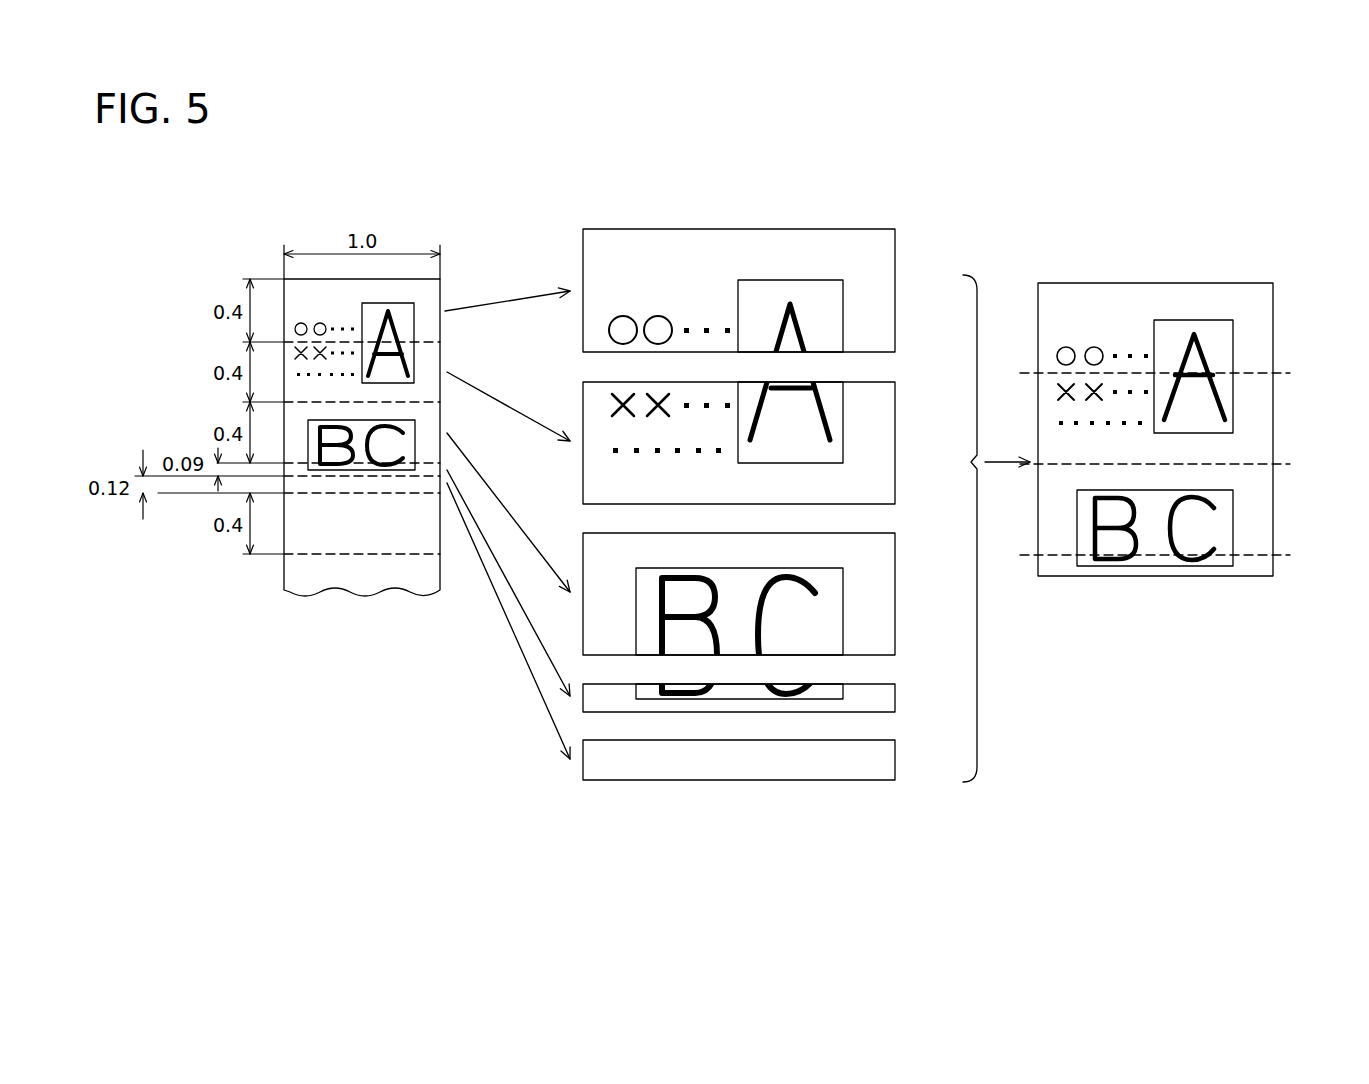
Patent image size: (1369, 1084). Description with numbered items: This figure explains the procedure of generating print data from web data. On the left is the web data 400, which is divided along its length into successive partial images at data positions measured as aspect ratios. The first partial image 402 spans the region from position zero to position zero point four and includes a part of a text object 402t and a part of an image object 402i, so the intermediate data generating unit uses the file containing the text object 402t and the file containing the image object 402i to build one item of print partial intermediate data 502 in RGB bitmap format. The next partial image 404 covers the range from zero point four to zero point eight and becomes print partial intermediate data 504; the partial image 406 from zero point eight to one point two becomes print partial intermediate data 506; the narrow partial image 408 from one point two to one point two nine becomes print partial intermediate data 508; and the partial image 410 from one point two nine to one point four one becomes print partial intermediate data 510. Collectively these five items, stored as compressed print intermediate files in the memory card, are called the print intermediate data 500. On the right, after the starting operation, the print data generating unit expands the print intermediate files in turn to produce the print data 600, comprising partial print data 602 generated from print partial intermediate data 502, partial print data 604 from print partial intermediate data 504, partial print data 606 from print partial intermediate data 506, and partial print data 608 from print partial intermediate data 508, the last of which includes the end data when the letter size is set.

The web data 400 is at (443, 295).
The partial image 402 is at (428, 325).
The text object 402t is at (308, 316).
The image object 402i is at (394, 301).
The partial image 404 is at (428, 359).
The partial image 406 is at (428, 422).
The partial image 408 is at (427, 470).
The partial image 410 is at (373, 482).
The print intermediate data 500 is at (785, 183).
The print partial intermediate data 502 is at (878, 292).
The print partial intermediate data 504 is at (878, 434).
The print partial intermediate data 506 is at (878, 590).
The print partial intermediate data 508 is at (878, 698).
The print partial intermediate data 510 is at (878, 760).
The print data 600 is at (1131, 280).
The partial print data 602 is at (1255, 327).
The partial print data 604 is at (1255, 405).
The partial print data 606 is at (1255, 507).
The partial print data 608 is at (1255, 567).